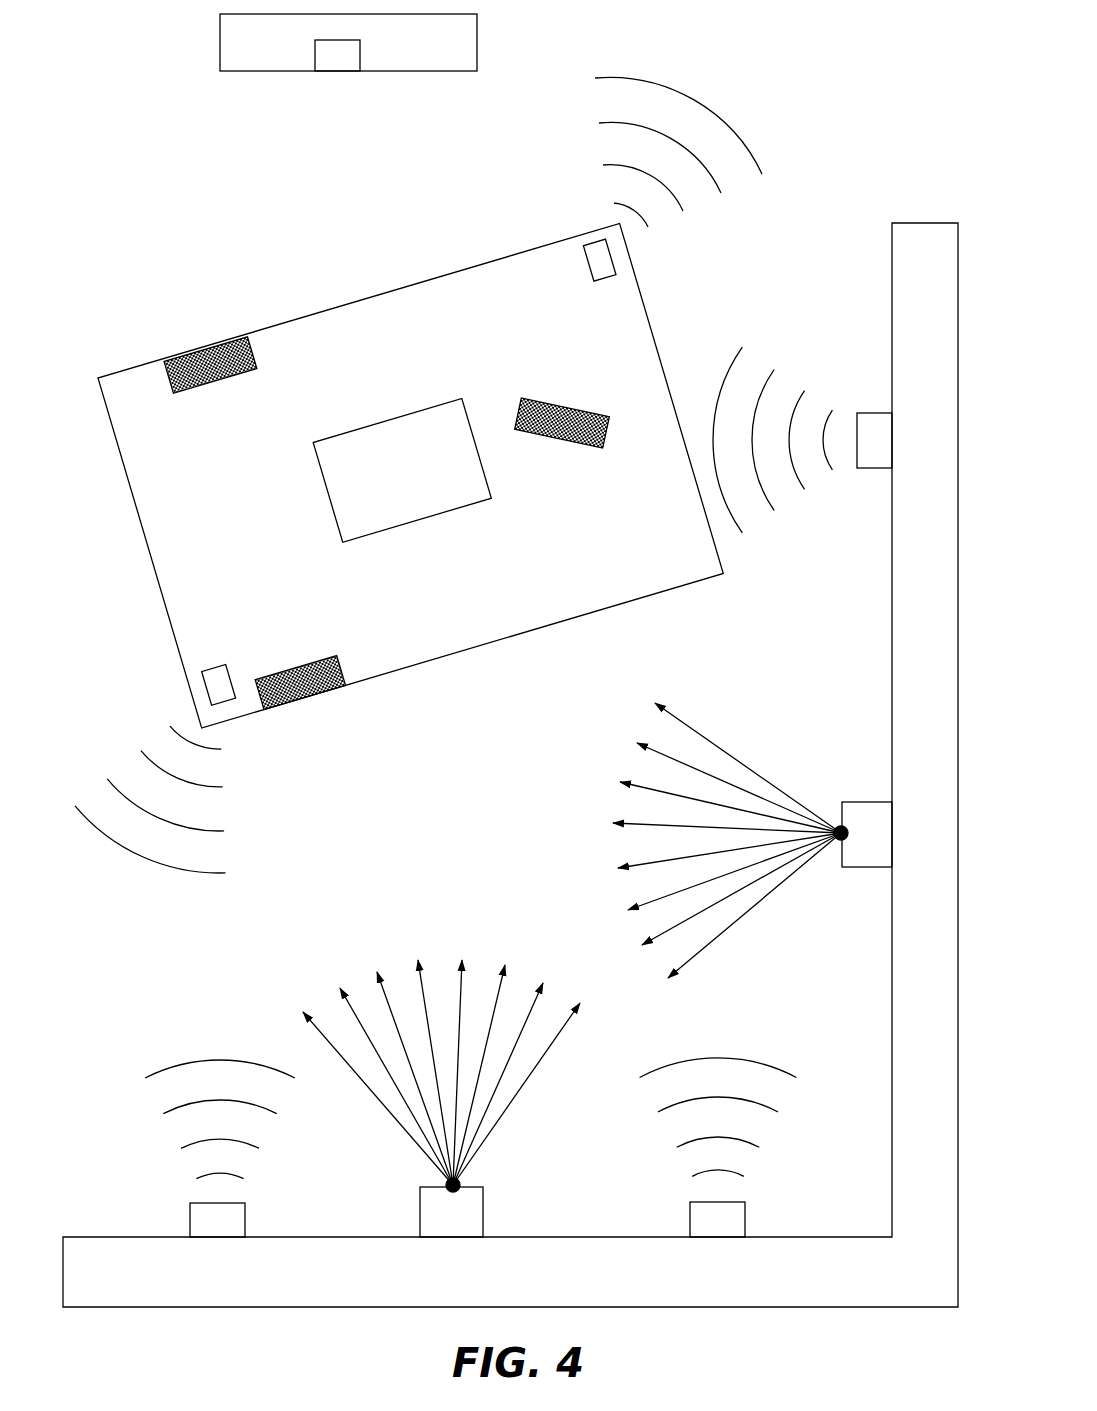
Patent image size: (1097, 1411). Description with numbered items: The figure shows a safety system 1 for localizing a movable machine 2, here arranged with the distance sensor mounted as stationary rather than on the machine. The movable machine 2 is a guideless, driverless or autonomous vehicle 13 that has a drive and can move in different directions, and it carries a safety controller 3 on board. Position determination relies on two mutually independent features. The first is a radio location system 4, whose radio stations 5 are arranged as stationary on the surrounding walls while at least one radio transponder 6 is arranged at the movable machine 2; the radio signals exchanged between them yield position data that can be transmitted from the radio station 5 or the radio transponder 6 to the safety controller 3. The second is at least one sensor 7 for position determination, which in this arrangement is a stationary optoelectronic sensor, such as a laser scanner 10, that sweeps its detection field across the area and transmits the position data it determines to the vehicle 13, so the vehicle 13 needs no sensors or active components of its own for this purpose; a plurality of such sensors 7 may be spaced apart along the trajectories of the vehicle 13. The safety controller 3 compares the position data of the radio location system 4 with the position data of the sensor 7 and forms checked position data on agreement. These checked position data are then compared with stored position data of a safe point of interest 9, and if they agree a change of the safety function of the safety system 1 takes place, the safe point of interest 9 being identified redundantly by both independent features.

The safety system 1 is at (790, 166).
The movable machine 2 is at (325, 305).
The safety controller 3 is at (360, 455).
The radio location system 4 is at (730, 255).
The radio station 5 is at (873, 456).
The radio transponder 6 is at (350, 71).
The sensor 7 is at (857, 872).
The safe point of interest 9 is at (337, 78).
The laser scanner 10 is at (877, 818).
The autonomous vehicle 13 is at (425, 300).